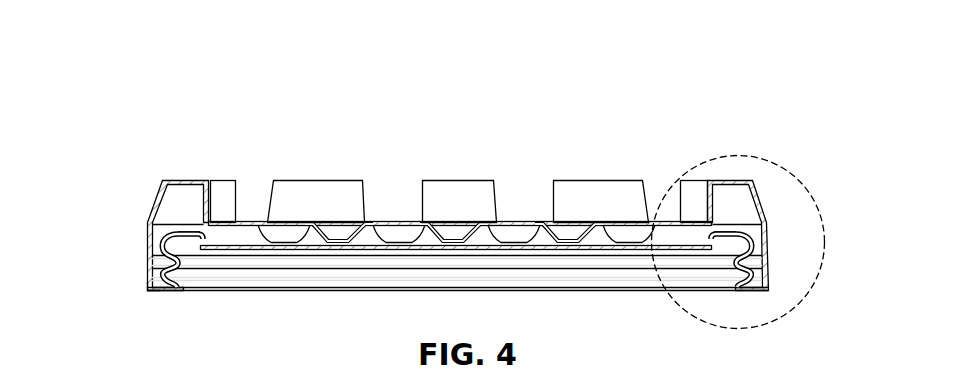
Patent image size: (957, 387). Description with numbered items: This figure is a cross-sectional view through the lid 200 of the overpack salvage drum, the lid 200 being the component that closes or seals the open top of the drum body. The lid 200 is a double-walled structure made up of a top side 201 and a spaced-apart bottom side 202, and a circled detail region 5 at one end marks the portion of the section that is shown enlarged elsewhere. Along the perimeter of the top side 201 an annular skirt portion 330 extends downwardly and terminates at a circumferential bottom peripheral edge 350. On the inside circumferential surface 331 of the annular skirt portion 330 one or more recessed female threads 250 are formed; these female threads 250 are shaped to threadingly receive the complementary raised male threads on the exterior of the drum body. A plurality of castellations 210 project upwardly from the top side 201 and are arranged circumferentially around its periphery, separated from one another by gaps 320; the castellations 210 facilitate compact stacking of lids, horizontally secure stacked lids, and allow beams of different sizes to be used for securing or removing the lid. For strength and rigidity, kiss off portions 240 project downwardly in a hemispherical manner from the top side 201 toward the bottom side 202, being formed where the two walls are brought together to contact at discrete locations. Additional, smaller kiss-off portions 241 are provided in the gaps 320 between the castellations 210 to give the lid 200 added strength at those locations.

The detail region 5 is at (734, 155).
The lid 200 is at (147, 222).
The top side 201 is at (252, 212).
The bottom side 202 is at (254, 262).
The castellations 210 is at (318, 180).
The kiss off portions 240 is at (518, 232).
The additional kiss-off portions 241 is at (192, 228).
The female threads 250 is at (203, 269).
The gaps 320 is at (400, 194).
The annular skirt portion 330 is at (147, 268).
The inside circumferential surface 331 is at (583, 273).
The bottom peripheral edge 350 is at (158, 292).